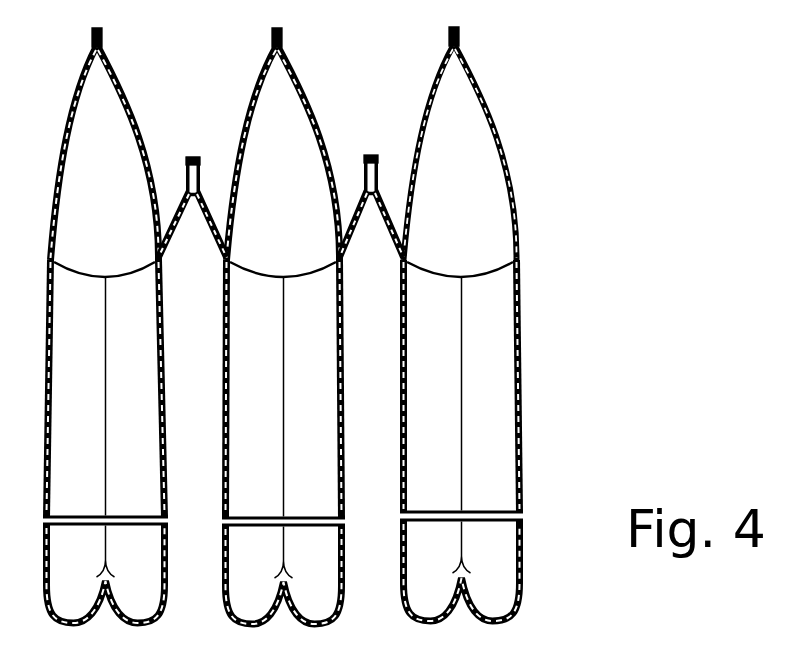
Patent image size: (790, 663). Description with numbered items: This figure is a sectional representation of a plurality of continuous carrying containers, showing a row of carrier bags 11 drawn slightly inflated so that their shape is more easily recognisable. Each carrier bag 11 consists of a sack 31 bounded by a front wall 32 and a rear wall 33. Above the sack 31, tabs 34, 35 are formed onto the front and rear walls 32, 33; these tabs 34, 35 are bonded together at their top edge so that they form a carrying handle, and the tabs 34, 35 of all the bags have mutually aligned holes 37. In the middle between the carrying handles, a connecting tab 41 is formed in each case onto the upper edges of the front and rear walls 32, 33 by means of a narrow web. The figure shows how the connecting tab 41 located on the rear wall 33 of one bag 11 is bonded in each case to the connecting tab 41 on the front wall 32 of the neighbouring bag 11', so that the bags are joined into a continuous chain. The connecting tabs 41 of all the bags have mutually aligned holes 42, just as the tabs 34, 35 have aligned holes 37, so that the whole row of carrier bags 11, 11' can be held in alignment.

The carrier bag 11 is at (480, 323).
The neighbouring bag 11' is at (284, 326).
The sack 31 is at (143, 340).
The front wall 32 is at (521, 321).
The rear wall 33 is at (222, 433).
The tab 34 is at (500, 175).
The tab 35 is at (432, 88).
The hole 37 is at (485, 113).
The connecting tab 41 is at (378, 156).
The hole 42 is at (187, 170).